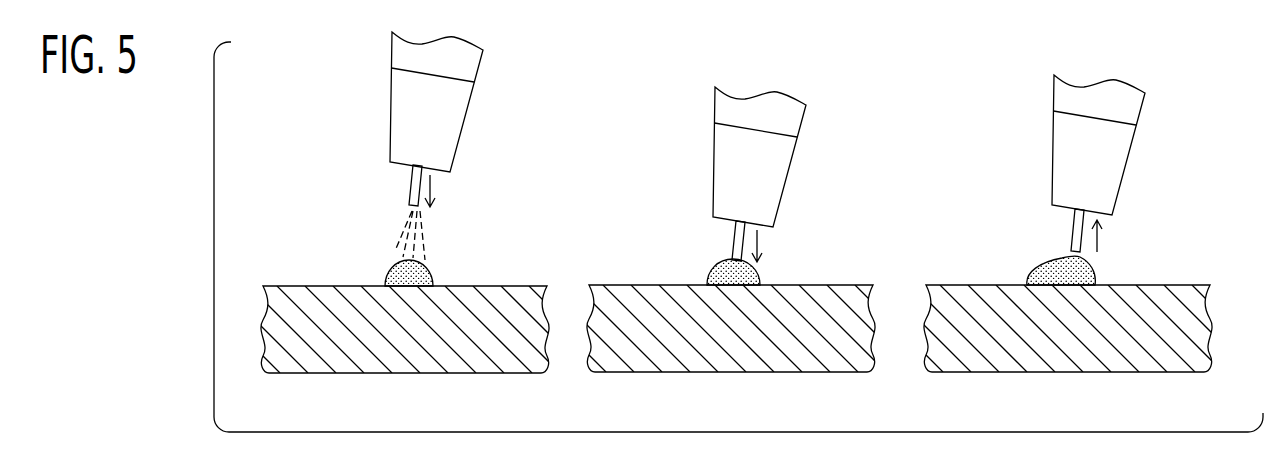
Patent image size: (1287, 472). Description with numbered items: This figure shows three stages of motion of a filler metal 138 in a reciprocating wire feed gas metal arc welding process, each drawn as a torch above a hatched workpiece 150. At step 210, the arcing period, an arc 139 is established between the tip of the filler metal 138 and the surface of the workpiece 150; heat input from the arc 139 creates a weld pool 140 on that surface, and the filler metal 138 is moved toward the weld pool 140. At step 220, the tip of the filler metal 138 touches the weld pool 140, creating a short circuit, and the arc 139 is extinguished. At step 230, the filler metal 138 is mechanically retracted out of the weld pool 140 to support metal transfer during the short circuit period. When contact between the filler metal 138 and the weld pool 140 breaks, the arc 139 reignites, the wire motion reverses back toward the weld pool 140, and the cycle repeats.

The filler metal 138 is at (411, 183).
The arc 139 is at (397, 242).
The weld pool 140 is at (424, 272).
The workpiece 150 is at (300, 297).
The arcing period step 210 is at (514, 143).
The short circuit step 220 is at (847, 162).
The retraction step 230 is at (1180, 163).